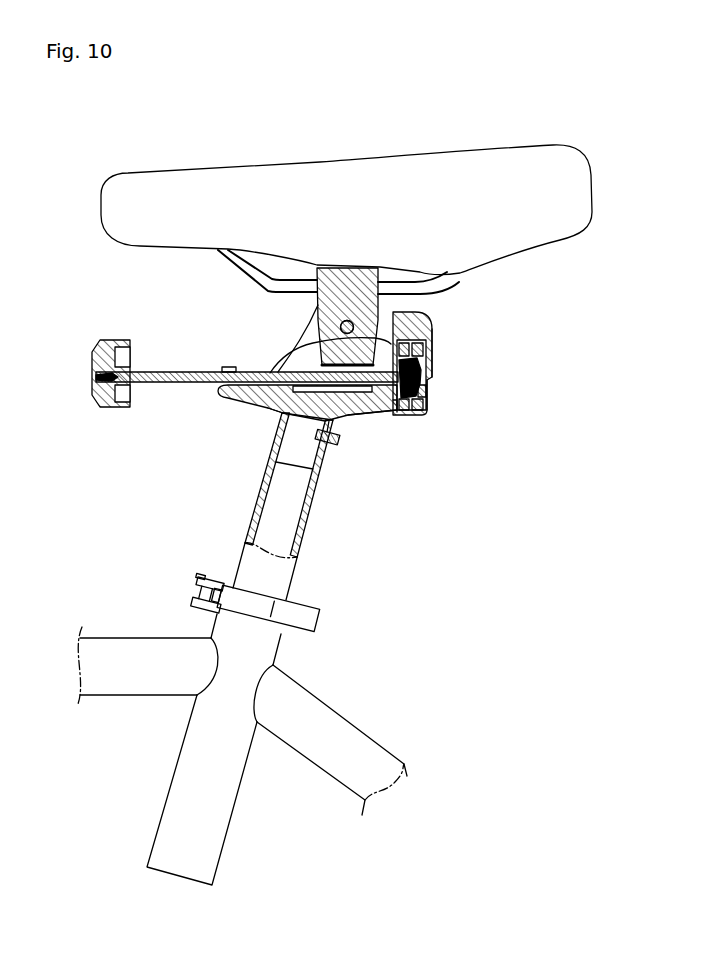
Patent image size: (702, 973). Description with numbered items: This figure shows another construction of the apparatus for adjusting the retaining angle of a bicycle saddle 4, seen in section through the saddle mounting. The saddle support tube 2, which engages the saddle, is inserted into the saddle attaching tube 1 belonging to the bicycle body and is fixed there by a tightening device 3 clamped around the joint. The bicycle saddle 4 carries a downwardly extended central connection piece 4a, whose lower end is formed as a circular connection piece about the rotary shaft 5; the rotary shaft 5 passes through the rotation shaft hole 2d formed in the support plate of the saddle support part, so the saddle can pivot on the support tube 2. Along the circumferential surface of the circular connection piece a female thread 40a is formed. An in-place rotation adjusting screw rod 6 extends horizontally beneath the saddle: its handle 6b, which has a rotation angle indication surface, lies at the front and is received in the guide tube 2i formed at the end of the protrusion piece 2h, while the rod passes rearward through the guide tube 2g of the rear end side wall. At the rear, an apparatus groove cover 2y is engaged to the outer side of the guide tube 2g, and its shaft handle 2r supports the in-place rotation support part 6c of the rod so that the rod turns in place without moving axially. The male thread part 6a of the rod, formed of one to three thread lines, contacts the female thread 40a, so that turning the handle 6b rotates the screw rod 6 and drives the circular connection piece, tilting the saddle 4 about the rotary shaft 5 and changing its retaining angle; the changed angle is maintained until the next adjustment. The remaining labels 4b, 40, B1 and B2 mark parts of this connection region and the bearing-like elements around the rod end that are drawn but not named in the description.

The saddle attaching tube 1 is at (228, 797).
The saddle support tube 2 is at (297, 506).
The tightening device 3 is at (318, 617).
The bicycle saddle 4 is at (344, 170).
The central connection piece 4a is at (372, 268).
The saddle side block 4b is at (468, 363).
The rotation shaft hole 2d is at (433, 327).
The rotary shaft 5 is at (380, 311).
The in-place rotation adjusting screw rod 6 is at (176, 371).
The male thread part 6a is at (376, 410).
The handle 6b is at (100, 352).
The in-place rotation support part 6c is at (416, 398).
The guide tube 2i is at (230, 367).
The protrusion piece 2h is at (287, 412).
The guide tube 2g is at (398, 412).
The shaft handle 2r is at (421, 372).
The apparatus groove cover 2y is at (427, 388).
The bearing B1 is at (413, 408).
The bearing B2 is at (421, 364).
The lower clamp body 40 is at (294, 435).
The female thread 40a is at (283, 422).